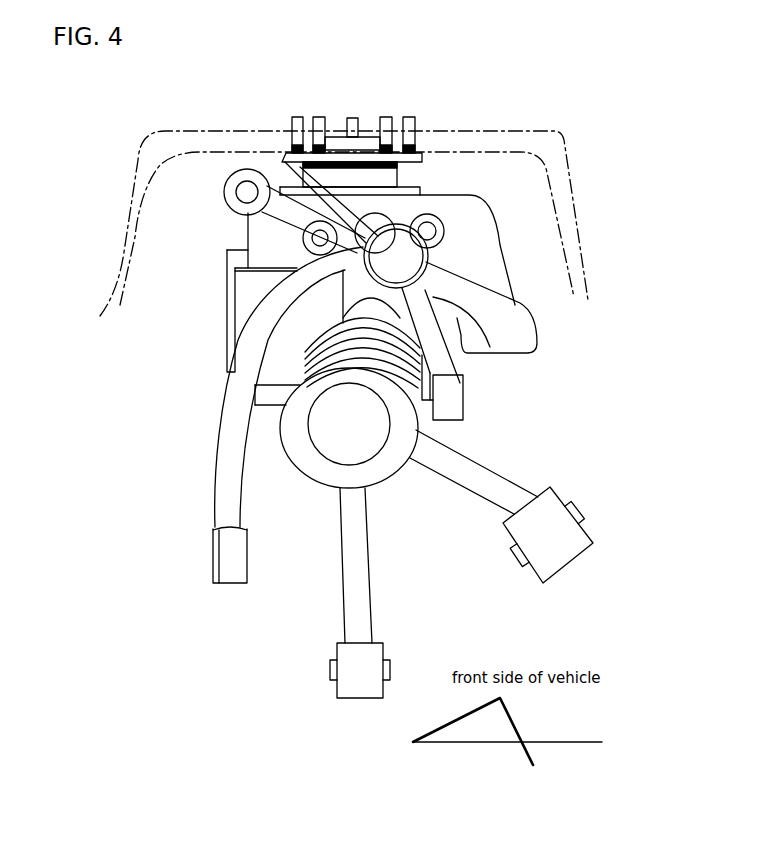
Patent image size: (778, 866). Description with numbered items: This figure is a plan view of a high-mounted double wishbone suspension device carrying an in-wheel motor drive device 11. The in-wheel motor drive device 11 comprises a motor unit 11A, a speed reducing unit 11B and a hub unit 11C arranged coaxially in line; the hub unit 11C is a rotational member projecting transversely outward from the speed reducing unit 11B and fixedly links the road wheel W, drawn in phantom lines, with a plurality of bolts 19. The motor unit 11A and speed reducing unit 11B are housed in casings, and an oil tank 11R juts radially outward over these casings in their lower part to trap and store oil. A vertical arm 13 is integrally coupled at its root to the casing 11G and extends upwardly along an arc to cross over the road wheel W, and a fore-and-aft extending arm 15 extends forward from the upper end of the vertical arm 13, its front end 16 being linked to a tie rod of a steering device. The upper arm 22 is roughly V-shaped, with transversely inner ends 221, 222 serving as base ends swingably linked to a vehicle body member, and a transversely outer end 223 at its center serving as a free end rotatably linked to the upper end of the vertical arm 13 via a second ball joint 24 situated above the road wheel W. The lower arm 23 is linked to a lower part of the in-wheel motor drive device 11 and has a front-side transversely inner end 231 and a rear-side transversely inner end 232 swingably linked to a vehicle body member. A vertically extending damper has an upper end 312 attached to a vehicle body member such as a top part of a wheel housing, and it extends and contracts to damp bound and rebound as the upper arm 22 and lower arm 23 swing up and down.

The in-wheel motor drive device 11 is at (270, 407).
The motor unit 11A is at (463, 357).
The speed reducing unit 11B is at (257, 272).
The hub unit 11C is at (417, 152).
The casing 11G is at (282, 235).
The oil tank 11R is at (235, 312).
The vertical arm 13 is at (525, 337).
The fore-and-aft extending arm 15 is at (282, 213).
The front end 16 is at (233, 181).
The bolts 19 is at (297, 117).
The upper arm 22 is at (430, 337).
The transversely inner end 221 is at (227, 559).
The transversely inner end 222 is at (455, 405).
The transversely outer end 223 is at (285, 152).
The lower arm 23 is at (495, 470).
The front-side transversely inner end 231 is at (360, 680).
The rear-side transversely inner end 232 is at (560, 543).
The second ball joint 24 is at (400, 250).
The upper end 312 is at (390, 463).
The road wheel W is at (572, 207).